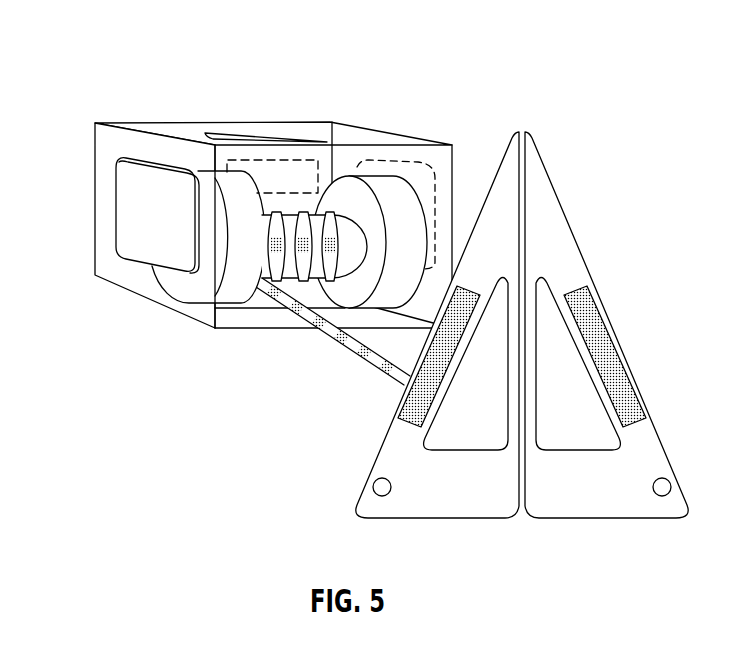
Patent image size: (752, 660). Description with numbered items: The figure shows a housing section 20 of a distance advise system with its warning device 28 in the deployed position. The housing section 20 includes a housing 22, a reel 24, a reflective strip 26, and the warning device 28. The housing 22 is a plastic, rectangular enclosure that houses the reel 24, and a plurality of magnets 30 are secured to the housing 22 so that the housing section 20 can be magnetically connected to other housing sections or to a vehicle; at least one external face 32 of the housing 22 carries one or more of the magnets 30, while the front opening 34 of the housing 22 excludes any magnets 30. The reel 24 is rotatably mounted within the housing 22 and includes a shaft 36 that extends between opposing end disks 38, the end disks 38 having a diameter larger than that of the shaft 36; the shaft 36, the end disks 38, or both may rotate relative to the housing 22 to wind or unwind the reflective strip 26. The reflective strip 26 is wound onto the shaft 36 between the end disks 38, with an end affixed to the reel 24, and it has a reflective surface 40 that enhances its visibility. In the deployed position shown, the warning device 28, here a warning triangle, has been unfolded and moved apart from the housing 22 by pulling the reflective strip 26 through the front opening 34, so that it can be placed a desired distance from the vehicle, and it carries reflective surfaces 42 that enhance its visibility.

The housing section 20 is at (365, 277).
The housing 22 is at (155, 121).
The reel 24 is at (224, 295).
The reflective strip 26 is at (335, 333).
The warning device 28 is at (522, 325).
The magnets 30 is at (118, 213).
The external face 32 is at (197, 130).
The front opening 34 is at (385, 153).
The shaft 36 is at (297, 215).
The end disks 38 is at (177, 297).
The reflective surface 40 is at (396, 377).
The reflective surfaces 42 is at (610, 345).